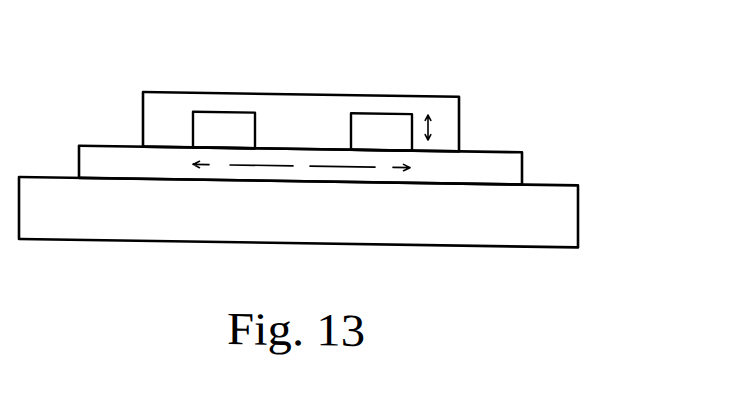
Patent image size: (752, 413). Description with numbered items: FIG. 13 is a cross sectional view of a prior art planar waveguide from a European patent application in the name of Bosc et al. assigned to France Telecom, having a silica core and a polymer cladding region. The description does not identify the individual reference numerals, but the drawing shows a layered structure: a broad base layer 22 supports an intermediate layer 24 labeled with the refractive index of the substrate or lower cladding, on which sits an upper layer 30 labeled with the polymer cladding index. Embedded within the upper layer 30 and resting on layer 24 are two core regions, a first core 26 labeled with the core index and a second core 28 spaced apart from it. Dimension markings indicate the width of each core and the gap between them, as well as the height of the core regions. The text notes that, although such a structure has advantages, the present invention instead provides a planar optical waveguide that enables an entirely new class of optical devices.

The substrate 22 is at (570, 212).
The lower cladding layer (refractive index n_s) 24 is at (523, 145).
The first waveguide core (refractive index n_c) 26 is at (222, 107).
The second waveguide core 28 is at (385, 112).
The upper cladding layer (refractive index n_p) 30 is at (460, 91).